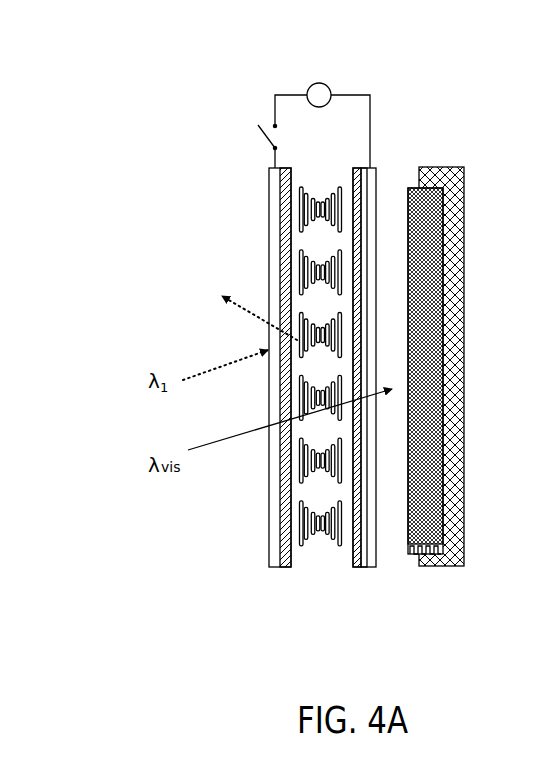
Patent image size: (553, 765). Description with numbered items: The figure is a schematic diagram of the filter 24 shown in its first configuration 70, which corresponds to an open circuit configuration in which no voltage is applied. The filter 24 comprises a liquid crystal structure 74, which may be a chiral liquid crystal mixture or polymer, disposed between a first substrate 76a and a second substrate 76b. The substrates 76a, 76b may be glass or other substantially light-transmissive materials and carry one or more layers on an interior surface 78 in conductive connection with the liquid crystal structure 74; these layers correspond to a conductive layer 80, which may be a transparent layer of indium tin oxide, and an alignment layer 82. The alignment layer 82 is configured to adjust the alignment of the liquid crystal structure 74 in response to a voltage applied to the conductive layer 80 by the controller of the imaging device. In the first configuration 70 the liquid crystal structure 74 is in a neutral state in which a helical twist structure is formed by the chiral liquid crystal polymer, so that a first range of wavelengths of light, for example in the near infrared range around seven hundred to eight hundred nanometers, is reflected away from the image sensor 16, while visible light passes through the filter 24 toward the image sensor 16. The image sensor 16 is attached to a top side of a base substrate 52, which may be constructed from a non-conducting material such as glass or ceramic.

The filter 24 is at (253, 101).
The first configuration 70 is at (248, 98).
The image sensor 16 is at (410, 208).
The base substrate 52 is at (457, 250).
The interior surface 78 is at (284, 497).
The first substrate 76a is at (239, 387).
The liquid crystal structure 74 is at (316, 572).
The second substrate 76b is at (375, 414).
The alignment layer 82 is at (356, 568).
The conductive layer 80 is at (364, 568).